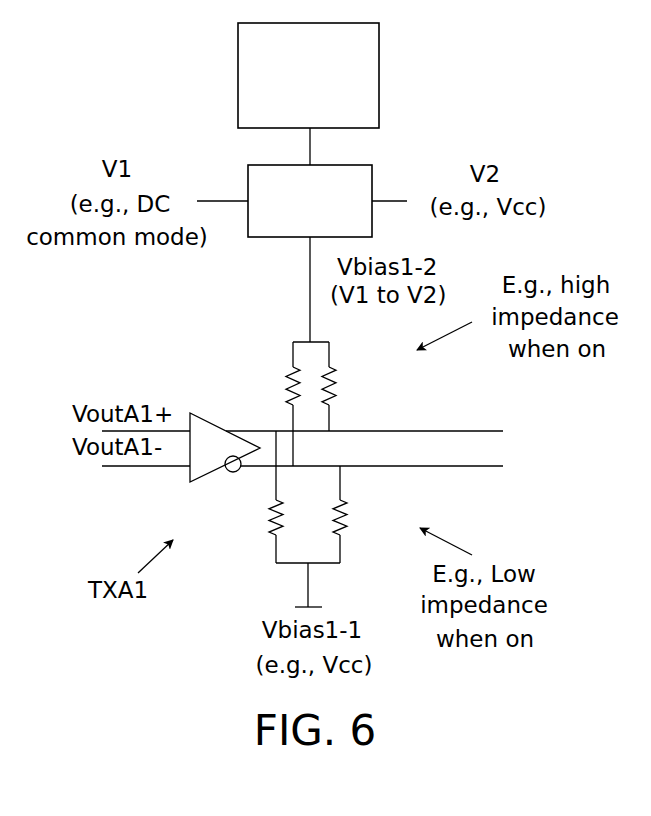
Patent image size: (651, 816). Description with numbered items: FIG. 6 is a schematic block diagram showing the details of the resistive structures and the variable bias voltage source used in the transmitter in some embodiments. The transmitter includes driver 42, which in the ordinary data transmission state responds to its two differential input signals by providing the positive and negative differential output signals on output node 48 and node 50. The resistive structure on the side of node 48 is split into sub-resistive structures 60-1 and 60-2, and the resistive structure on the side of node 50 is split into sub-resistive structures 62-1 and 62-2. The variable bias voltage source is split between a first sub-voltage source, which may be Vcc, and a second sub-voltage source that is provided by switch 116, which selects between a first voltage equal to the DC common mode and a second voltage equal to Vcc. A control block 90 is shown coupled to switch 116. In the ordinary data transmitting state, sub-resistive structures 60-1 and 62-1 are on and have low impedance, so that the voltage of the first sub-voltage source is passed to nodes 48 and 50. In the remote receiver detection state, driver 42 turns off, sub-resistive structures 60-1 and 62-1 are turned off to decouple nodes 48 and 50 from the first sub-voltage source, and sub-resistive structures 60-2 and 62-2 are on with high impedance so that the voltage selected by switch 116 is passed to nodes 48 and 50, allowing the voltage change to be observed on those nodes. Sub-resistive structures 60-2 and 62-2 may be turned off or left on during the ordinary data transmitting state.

The control circuit 90 is at (323, 114).
The switch 116 is at (277, 238).
The sub-resistive structure 60-2 is at (290, 376).
The sub-resistive structure 62-2 is at (331, 372).
The sub-resistive structure 60-1 is at (273, 530).
The sub-resistive structure 62-1 is at (383, 536).
The driver 42 is at (210, 474).
The output node 48 is at (477, 431).
The node 50 is at (477, 466).